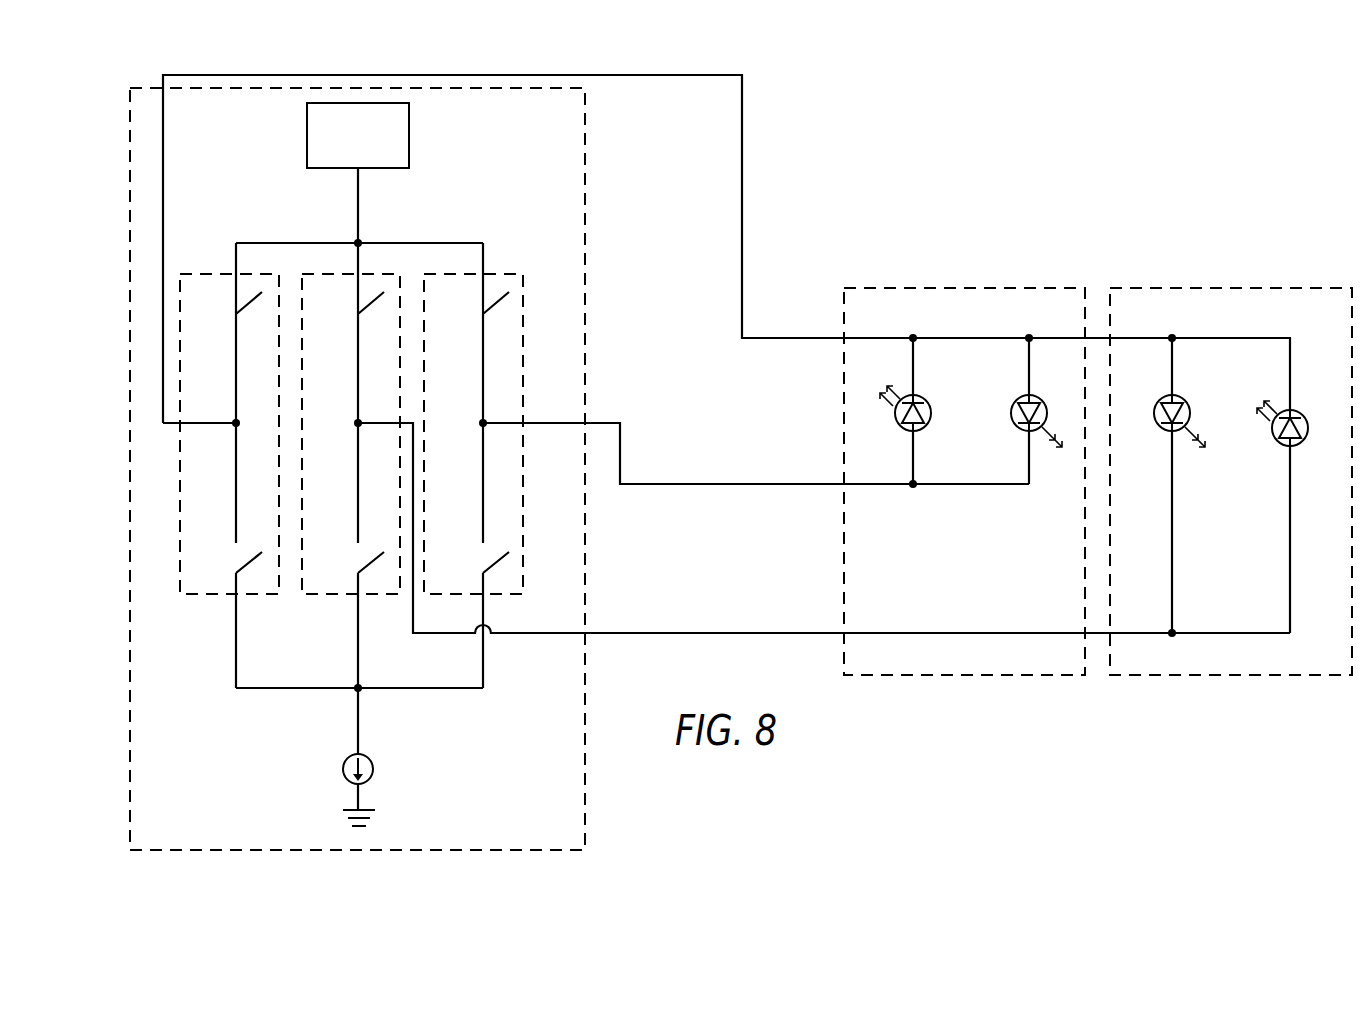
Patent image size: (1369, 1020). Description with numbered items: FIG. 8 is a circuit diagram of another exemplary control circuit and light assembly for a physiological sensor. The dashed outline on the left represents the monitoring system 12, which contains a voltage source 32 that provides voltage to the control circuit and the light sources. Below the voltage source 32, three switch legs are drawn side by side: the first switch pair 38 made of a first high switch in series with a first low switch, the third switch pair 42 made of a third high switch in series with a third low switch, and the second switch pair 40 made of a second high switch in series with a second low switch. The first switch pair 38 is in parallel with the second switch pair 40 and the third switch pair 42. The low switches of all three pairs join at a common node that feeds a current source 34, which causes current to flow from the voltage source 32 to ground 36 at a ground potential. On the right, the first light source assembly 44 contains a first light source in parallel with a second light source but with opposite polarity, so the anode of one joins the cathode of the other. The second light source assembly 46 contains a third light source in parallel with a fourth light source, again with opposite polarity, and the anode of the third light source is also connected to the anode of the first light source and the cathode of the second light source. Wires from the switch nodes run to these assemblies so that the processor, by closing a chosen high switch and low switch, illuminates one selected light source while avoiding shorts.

The monitoring system 12 is at (128, 690).
The voltage source 32 is at (409, 138).
The current source 34 is at (373, 769).
The ground 36 is at (370, 818).
The first switch pair 38 is at (202, 594).
The second switch pair 40 is at (507, 274).
The third switch pair 42 is at (327, 594).
The first light source assembly 44 is at (1045, 288).
The second light source assembly 46 is at (1310, 288).